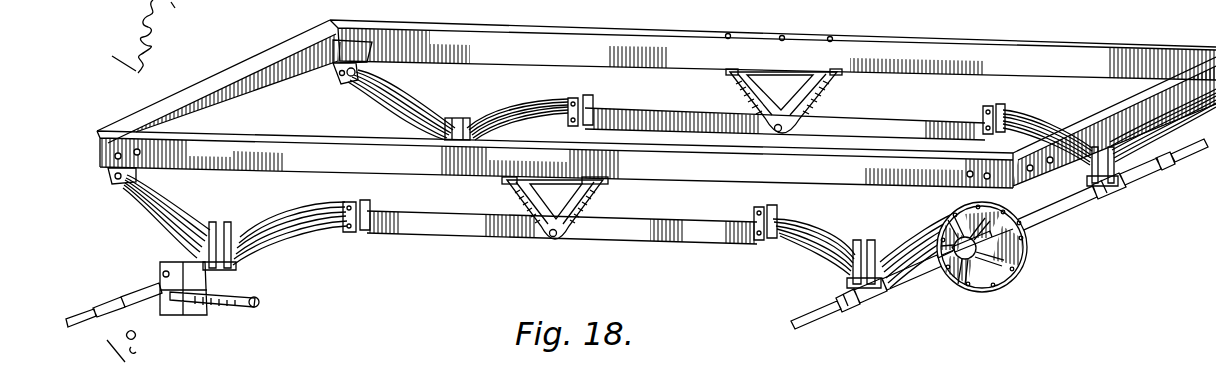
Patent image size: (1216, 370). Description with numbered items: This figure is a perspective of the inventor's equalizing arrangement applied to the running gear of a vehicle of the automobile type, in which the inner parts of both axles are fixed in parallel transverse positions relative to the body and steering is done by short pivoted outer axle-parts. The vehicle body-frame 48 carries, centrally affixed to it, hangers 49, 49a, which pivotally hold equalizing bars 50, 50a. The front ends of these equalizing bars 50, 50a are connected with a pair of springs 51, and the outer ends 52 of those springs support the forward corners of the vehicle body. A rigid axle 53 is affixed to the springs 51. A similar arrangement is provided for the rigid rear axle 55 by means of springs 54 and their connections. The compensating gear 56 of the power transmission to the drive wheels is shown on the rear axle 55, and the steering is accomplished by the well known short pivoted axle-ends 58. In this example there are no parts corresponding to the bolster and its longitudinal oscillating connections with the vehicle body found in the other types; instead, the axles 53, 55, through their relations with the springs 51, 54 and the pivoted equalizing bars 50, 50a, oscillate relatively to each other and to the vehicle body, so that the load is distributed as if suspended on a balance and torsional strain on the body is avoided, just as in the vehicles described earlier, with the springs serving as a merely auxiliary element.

The vehicle body-frame 48 is at (656, 104).
The hanger 49 is at (832, 91).
The hanger 49a is at (597, 202).
The equalizing bar 50 is at (786, 117).
The equalizing bar 50a is at (630, 246).
The springs 51 is at (345, 168).
The outer ends of the springs 52 is at (113, 181).
The rigid axle 53 is at (350, 197).
The springs 54 is at (994, 188).
The rigid rear axle 55 is at (999, 234).
The compensating gear 56 is at (991, 247).
The short pivoted axle-ends 58 is at (162, 294).